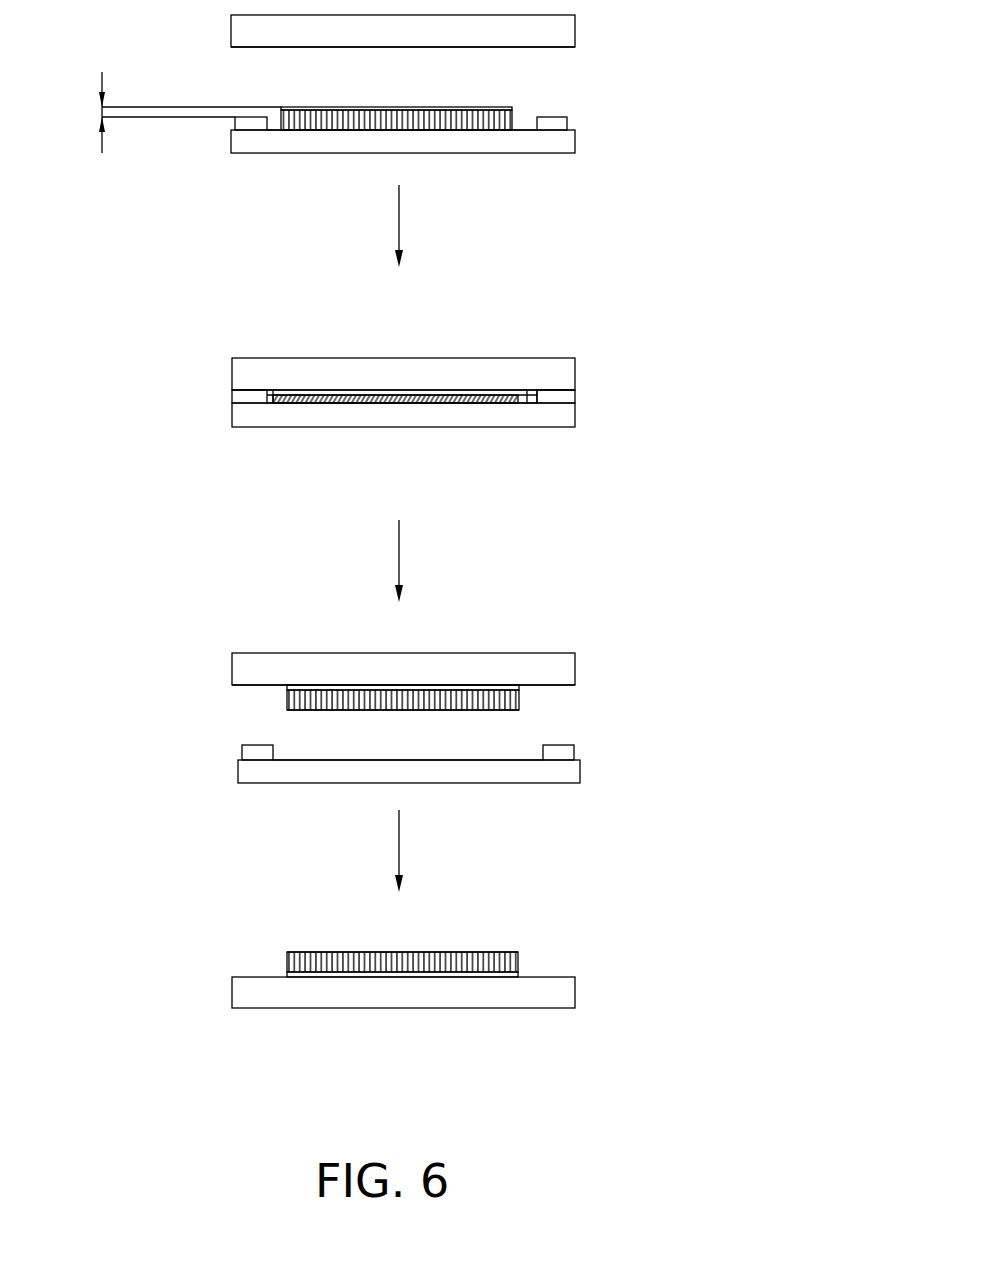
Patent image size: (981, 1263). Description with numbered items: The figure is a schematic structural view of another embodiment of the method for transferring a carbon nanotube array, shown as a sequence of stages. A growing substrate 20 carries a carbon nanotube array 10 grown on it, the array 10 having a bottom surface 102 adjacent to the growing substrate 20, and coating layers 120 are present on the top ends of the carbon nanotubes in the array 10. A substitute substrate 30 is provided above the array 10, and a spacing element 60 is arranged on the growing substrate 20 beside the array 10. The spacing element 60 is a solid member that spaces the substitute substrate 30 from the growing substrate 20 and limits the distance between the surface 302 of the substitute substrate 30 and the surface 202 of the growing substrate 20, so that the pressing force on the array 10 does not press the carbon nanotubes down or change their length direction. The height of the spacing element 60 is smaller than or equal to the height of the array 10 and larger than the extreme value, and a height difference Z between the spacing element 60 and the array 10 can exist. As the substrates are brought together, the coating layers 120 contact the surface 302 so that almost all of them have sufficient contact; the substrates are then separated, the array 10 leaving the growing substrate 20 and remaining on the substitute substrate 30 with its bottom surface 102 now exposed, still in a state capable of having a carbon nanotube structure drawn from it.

The carbon nanotube array 10 is at (478, 123).
The growing substrate 20 is at (565, 145).
The substitute substrate 30 is at (562, 29).
The spacing element 60 is at (560, 123).
The bottom surface 102 is at (297, 130).
The coating layer 120 is at (297, 107).
The surface of the growing substrate 202 is at (387, 133).
The surface of the substitute substrate 302 is at (250, 47).
The height difference Z is at (176, 112).